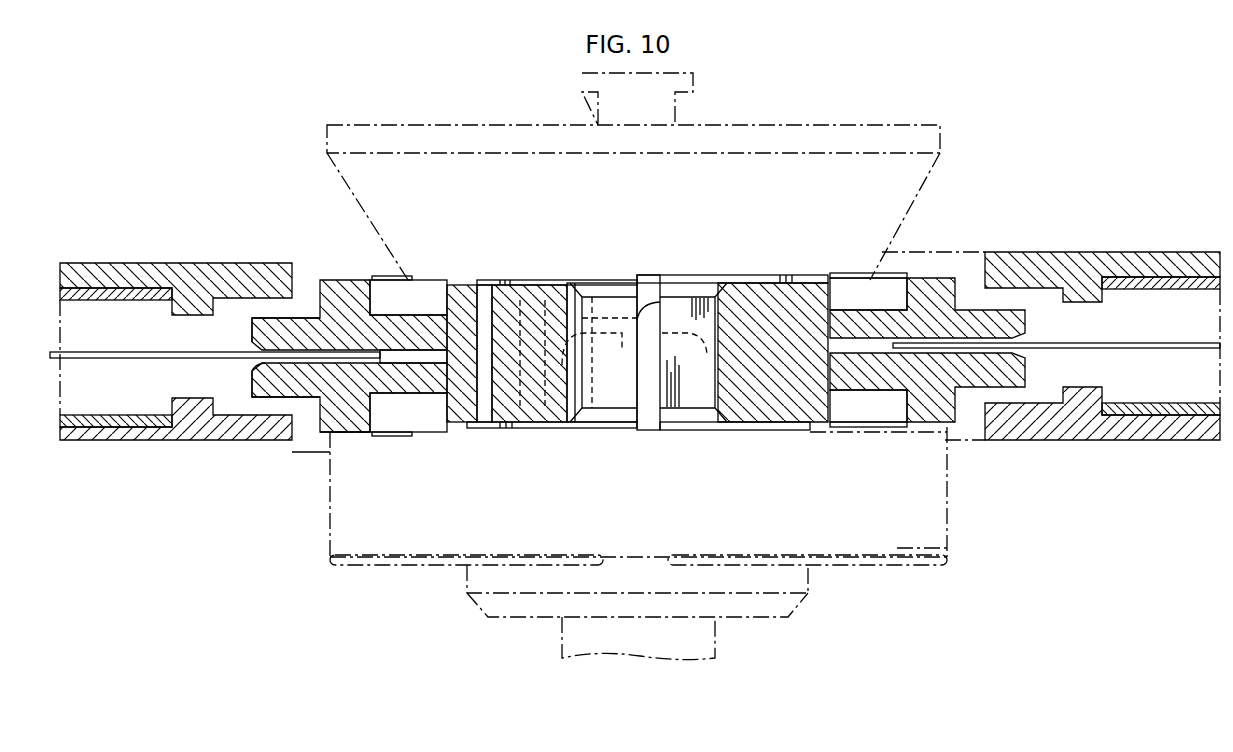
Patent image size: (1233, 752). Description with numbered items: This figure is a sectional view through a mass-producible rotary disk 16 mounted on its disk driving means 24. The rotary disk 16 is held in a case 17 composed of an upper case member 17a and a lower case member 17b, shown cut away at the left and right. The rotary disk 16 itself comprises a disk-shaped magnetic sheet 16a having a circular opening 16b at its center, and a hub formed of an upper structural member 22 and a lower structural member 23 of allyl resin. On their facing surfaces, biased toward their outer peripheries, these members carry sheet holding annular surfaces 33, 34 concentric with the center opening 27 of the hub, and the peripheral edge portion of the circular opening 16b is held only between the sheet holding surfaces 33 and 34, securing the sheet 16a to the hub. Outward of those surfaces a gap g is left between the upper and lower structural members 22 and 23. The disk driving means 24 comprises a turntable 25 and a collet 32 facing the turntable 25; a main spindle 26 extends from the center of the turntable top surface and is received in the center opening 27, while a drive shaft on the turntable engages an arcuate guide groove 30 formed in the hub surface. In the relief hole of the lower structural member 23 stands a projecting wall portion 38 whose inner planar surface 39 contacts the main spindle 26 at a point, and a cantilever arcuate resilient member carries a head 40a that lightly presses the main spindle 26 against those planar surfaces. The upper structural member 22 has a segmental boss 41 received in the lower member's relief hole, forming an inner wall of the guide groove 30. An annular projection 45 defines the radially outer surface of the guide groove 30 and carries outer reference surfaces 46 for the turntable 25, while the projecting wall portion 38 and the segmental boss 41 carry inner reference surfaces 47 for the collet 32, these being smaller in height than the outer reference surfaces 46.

The rotary disk 16 is at (1122, 344).
The magnetic sheet 16a is at (142, 358).
The circular opening 16b is at (388, 360).
The case 17 is at (1034, 254).
The upper case member 17a is at (186, 262).
The lower case member 17b is at (262, 446).
The upper structural member 22 is at (318, 294).
The lower structural member 23 is at (318, 452).
The disk driving means 24 is at (956, 494).
The turntable 25 is at (328, 492).
The main spindle 26 is at (630, 350).
The center opening 27 is at (612, 296).
The arcuate guide groove 30 is at (416, 288).
The collet 32 is at (912, 226).
The sheet holding annular surface 33 is at (320, 351).
The sheet holding annular surface 34 is at (322, 364).
The projecting wall portion 38 is at (746, 294).
The planar surface 39 is at (692, 298).
The head 40a is at (518, 290).
The segmental boss 41 is at (450, 412).
The annular projection 45 is at (352, 436).
The outer reference surface 46 is at (376, 276).
The inner reference surface 47 is at (812, 275).
The gap g is at (266, 362).